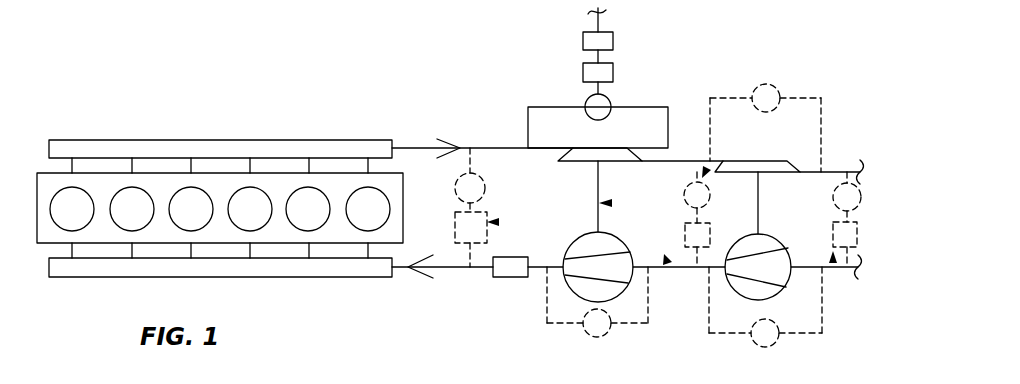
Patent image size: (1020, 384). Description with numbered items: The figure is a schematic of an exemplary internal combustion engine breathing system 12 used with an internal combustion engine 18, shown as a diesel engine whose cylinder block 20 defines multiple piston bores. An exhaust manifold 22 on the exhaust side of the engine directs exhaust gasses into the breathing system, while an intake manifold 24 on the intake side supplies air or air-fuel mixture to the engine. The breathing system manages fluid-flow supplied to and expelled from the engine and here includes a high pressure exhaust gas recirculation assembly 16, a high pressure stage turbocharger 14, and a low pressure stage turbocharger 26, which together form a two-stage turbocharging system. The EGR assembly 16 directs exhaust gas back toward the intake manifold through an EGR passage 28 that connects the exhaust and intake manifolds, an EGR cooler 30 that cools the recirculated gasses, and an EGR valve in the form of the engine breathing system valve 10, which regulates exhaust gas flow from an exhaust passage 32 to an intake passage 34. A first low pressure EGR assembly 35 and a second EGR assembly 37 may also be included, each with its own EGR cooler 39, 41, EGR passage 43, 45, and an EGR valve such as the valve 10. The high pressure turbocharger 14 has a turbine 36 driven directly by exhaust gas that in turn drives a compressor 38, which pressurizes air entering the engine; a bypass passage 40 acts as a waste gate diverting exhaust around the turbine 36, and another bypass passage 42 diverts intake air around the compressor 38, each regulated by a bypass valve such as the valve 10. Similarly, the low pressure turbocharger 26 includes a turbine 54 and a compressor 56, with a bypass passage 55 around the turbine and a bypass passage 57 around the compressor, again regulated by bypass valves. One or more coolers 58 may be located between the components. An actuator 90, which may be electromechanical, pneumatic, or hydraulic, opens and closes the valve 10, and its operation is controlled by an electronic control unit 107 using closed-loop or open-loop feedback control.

The engine breathing system valve 10 is at (610, 97).
The internal combustion engine breathing system 12 is at (743, 74).
The high pressure stage turbocharger 14 is at (612, 203).
The exhaust gas recirculation (EGR) assembly 16 is at (499, 222).
The internal combustion engine 18 is at (197, 135).
The cylinder block 20 is at (47, 237).
The exhaust manifold 22 is at (337, 148).
The intake manifold 24 is at (347, 270).
The low pressure stage turbocharger 26 is at (760, 200).
The EGR passage 28 is at (472, 162).
The EGR cooler 30 is at (486, 237).
The exhaust passage 32 is at (410, 147).
The intake passage 34 is at (450, 273).
The first low pressure EGR assembly 35 is at (667, 261).
The turbine 36 is at (593, 152).
The second EGR assembly 37 is at (833, 263).
The compressor 38 is at (607, 242).
The EGR cooler 39 is at (710, 223).
The bypass passage 40 is at (553, 107).
The EGR cooler 41 is at (858, 235).
The bypass passage 42 is at (648, 293).
The EGR passage 43 is at (707, 169).
The EGR passage 45 is at (852, 172).
The turbine 54 is at (758, 161).
The bypass passage 55 is at (805, 95).
The compressor 56 is at (762, 242).
The bypass passage 57 is at (807, 338).
The cooler 58 is at (510, 273).
The actuator 90 is at (608, 72).
The electronic control unit (ECU) 107 is at (610, 40).